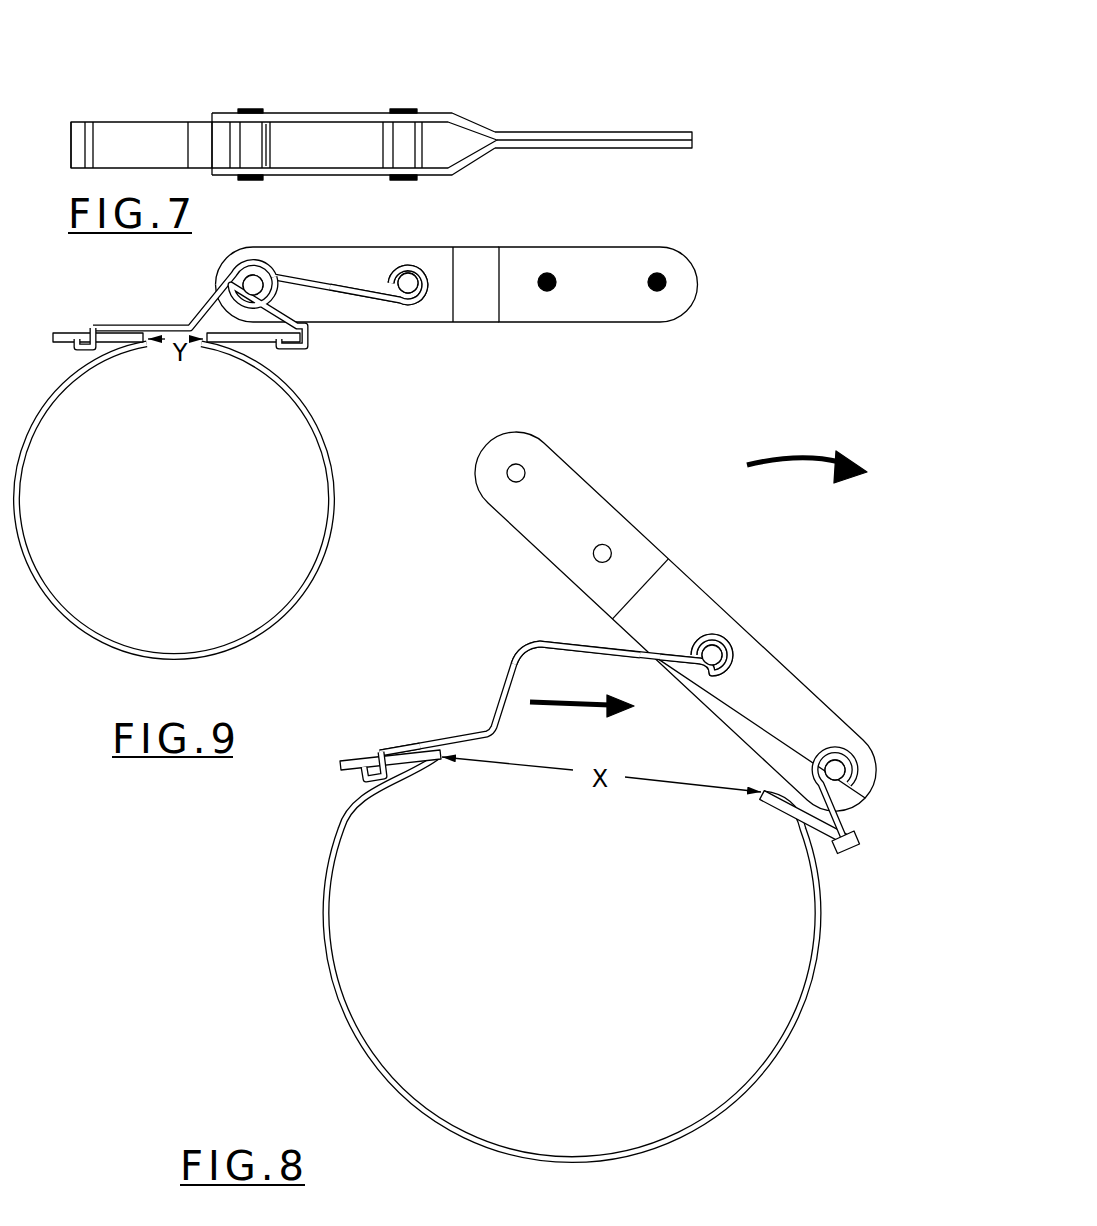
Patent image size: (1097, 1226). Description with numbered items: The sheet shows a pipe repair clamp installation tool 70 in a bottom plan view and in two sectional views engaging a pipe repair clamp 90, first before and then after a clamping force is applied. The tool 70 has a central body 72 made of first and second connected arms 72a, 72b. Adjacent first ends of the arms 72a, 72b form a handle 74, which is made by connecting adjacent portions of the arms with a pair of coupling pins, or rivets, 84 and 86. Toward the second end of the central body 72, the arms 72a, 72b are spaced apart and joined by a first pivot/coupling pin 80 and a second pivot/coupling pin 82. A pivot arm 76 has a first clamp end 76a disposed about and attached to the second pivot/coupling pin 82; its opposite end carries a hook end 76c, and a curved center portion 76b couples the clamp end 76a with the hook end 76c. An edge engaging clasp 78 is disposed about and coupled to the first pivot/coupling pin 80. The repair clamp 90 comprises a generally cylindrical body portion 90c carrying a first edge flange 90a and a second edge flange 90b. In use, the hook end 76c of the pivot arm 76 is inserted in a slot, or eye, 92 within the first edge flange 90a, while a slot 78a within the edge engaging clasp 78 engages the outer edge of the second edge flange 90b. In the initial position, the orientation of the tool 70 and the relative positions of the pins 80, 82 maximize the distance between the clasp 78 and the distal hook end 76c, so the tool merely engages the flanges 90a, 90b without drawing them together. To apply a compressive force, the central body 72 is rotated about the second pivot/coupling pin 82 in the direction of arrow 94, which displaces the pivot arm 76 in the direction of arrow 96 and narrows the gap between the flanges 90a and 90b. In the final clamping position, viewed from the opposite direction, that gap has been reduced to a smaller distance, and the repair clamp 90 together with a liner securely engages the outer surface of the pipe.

In FIG. 7, the repair clamp installation tool 70 is at (435, 109).
In FIG. 9, the repair clamp installation tool 70 is at (482, 293).
In FIG. 8, the repair clamp installation tool 70 is at (648, 617).
In FIG. 7, the central body 72 is at (353, 121).
In FIG. 9, the central body 72 is at (358, 303).
In FIG. 8, the central body 72 is at (771, 710).
In FIG. 7, the first arm 72a is at (353, 115).
In FIG. 9, the first arm 72a is at (370, 260).
In FIG. 7, the second arm 72b is at (352, 173).
In FIG. 8, the second arm 72b is at (785, 695).
In FIG. 7, the handle 74 is at (600, 130).
In FIG. 9, the handle 74 is at (620, 258).
In FIG. 8, the handle 74 is at (581, 534).
In FIG. 7, the pivot arm 76 is at (274, 86).
In FIG. 9, the pivot arm 76 is at (291, 259).
In FIG. 8, the pivot arm 76 is at (539, 700).
In FIG. 7, the first clamp end 76a is at (428, 140).
In FIG. 9, the first clamp end 76a is at (418, 274).
In FIG. 8, the first clamp end 76a is at (722, 646).
In FIG. 7, the curved center portion 76b is at (202, 137).
In FIG. 8, the curved center portion 76b is at (532, 640).
In FIG. 7, the hook end 76c is at (82, 146).
In FIG. 8, the hook end 76c is at (363, 775).
In FIG. 7, the edge engaging clasp 78 is at (268, 148).
In FIG. 9, the edge engaging clasp 78 is at (308, 333).
In FIG. 8, the edge engaging clasp 78 is at (856, 852).
In FIG. 8, the slot 78a is at (847, 860).
In FIG. 7, the first pivot/coupling pin 80 is at (250, 108).
In FIG. 9, the first pivot/coupling pin 80 is at (253, 283).
In FIG. 8, the first pivot/coupling pin 80 is at (838, 766).
In FIG. 7, the second pivot/coupling pin 82 is at (407, 108).
In FIG. 9, the second pivot/coupling pin 82 is at (417, 295).
In FIG. 8, the second pivot/coupling pin 82 is at (713, 645).
In FIG. 9, the coupling pin 84 is at (547, 273).
In FIG. 8, the coupling pin 84 is at (602, 553).
In FIG. 9, the coupling pin 86 is at (664, 279).
In FIG. 8, the coupling pin 86 is at (515, 472).
In FIG. 9, the pipe repair clamp 90 is at (189, 535).
In FIG. 8, the pipe repair clamp 90 is at (565, 955).
In FIG. 9, the first edge flange 90a is at (60, 345).
In FIG. 8, the first edge flange 90a is at (405, 768).
In FIG. 9, the second edge flange 90b is at (258, 347).
In FIG. 8, the second edge flange 90b is at (790, 815).
In FIG. 9, the cylindrical body portion 90c is at (285, 620).
In FIG. 8, the cylindrical body portion 90c is at (462, 1128).
In FIG. 9, the slot 92 is at (94, 329).
In FIG. 8, the slot 92 is at (375, 757).
In FIG. 8, the arrow 94 is at (798, 460).
In FIG. 8, the arrow 96 is at (558, 708).